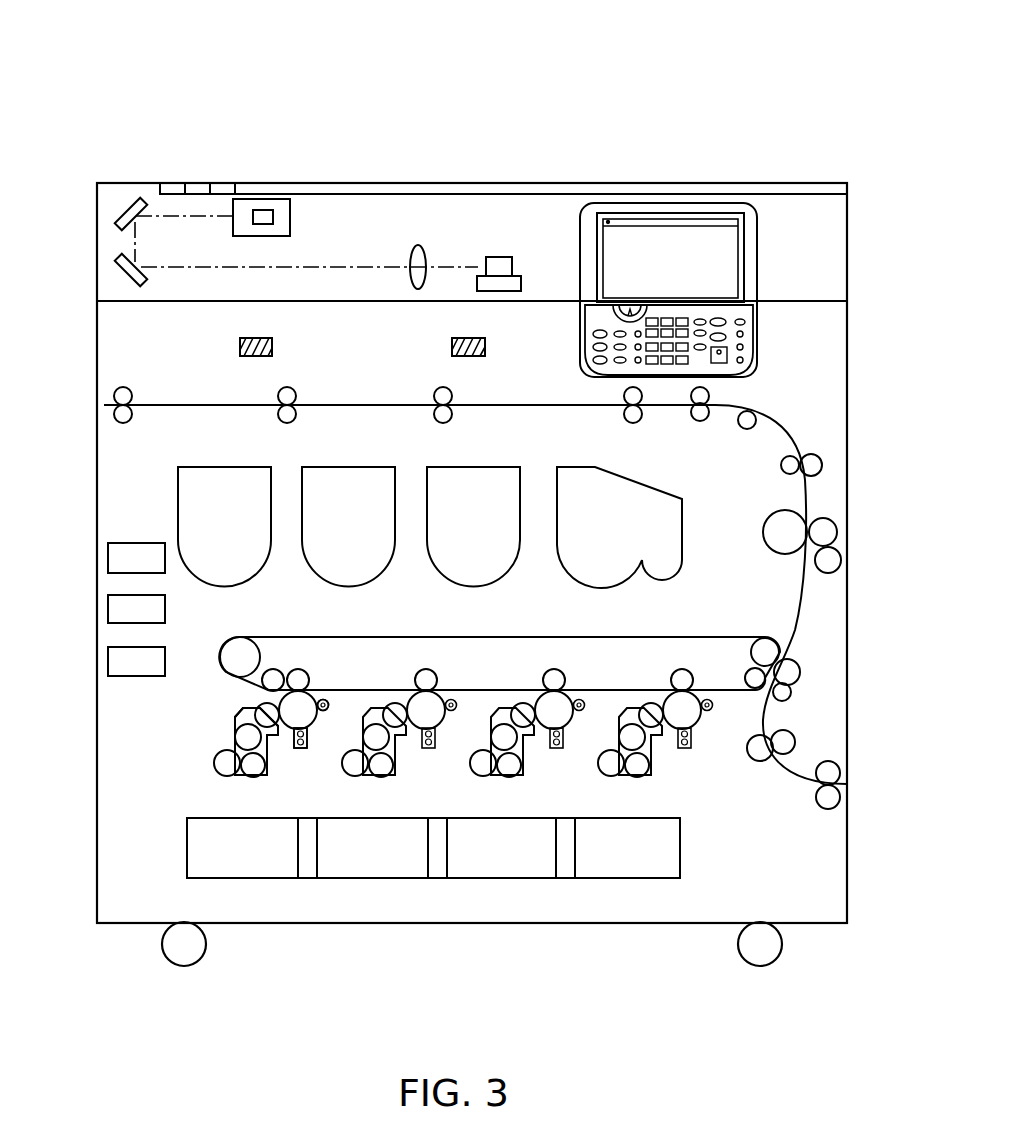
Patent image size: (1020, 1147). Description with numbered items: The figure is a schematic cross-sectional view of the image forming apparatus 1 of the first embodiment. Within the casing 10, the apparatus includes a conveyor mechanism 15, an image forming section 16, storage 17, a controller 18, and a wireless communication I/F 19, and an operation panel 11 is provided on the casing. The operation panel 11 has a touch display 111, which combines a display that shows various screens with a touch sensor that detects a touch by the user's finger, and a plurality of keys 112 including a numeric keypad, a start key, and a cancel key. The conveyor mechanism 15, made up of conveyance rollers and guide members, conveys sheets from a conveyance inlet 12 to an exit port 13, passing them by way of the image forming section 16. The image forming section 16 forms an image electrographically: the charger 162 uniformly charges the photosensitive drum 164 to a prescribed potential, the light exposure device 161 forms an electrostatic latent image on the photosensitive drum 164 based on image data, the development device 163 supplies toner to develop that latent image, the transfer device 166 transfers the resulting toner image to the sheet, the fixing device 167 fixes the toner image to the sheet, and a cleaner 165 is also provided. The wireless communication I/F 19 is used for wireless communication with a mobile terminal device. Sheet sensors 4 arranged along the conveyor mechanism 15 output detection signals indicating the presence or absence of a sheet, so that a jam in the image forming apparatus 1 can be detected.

The image forming apparatus 1 is at (622, 82).
The casing 10 is at (847, 466).
The operation panel 11 is at (737, 198).
The touch display 111 is at (662, 210).
The keys 112 is at (748, 314).
The conveyance inlet 12 is at (847, 784).
The exit port 13 is at (104, 405).
The conveyor mechanism 15 is at (784, 714).
The image forming section 16 is at (158, 859).
The light exposure device 161 is at (174, 815).
The charger 162 is at (300, 750).
The development device 163 is at (236, 714).
The photosensitive drum 164 is at (307, 691).
The cleaner 165 is at (328, 702).
The transfer device 166 is at (300, 632).
The fixing device 167 is at (788, 572).
The storage 17 is at (108, 558).
The controller 18 is at (108, 609).
The wireless communication I/F 19 is at (108, 662).
The sheet sensors 4 is at (240, 348).